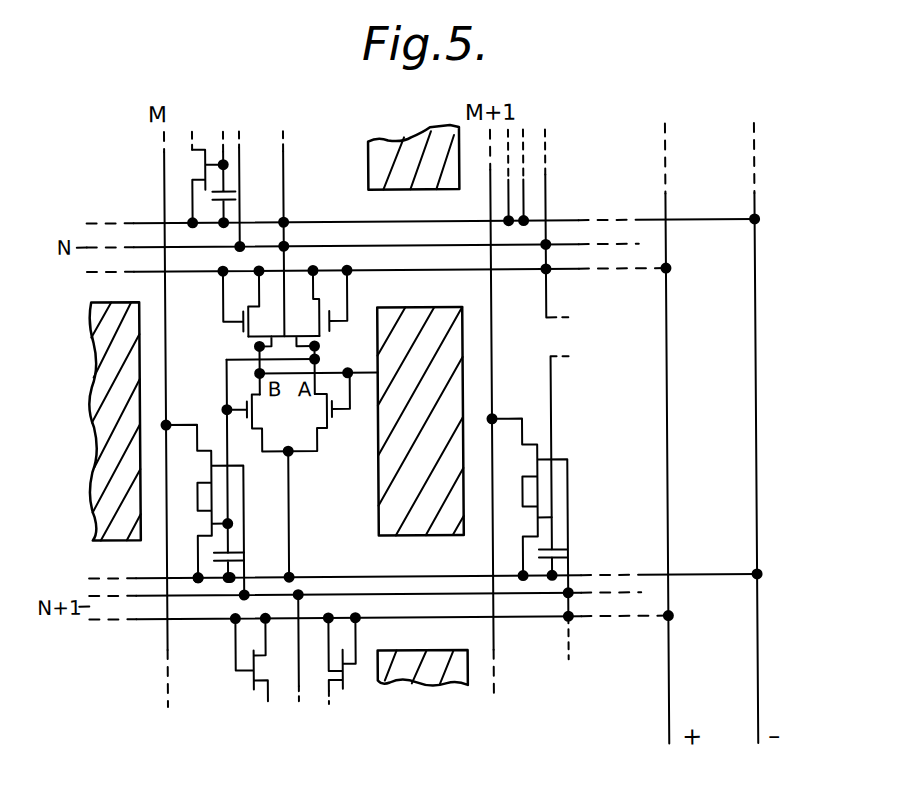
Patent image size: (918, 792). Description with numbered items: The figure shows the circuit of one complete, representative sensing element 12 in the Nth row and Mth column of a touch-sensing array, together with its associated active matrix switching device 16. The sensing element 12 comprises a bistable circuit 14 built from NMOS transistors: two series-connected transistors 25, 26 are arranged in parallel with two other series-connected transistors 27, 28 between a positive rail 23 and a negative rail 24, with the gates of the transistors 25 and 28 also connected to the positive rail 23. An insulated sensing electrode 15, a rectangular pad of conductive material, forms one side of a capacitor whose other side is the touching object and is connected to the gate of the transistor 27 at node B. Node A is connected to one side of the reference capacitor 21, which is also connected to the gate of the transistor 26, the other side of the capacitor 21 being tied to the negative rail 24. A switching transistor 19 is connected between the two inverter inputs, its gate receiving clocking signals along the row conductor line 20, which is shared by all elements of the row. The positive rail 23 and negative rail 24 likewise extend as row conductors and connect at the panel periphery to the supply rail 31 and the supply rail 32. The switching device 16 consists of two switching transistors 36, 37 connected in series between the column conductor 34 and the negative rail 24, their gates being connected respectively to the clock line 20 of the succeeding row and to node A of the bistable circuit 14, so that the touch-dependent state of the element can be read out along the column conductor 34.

The sensing element 12 is at (340, 507).
The bistable circuit 14 is at (238, 335).
The sensing electrode 15 is at (438, 180).
The switching device 16 is at (187, 523).
The switching transistor 19 is at (293, 330).
The line 20 is at (392, 244).
The reference capacitor 21 is at (240, 566).
The positive rail 23 is at (430, 270).
The negative rail 24 is at (345, 219).
The transistor 25 is at (330, 328).
The transistor 26 is at (332, 420).
The transistor 27 is at (258, 408).
The transistor 28 is at (252, 316).
The supply rail 31 is at (672, 432).
The supply rail 32 is at (760, 364).
The column conductor 34 is at (166, 184).
The switching transistor 36 is at (213, 448).
The switching transistor 37 is at (218, 533).